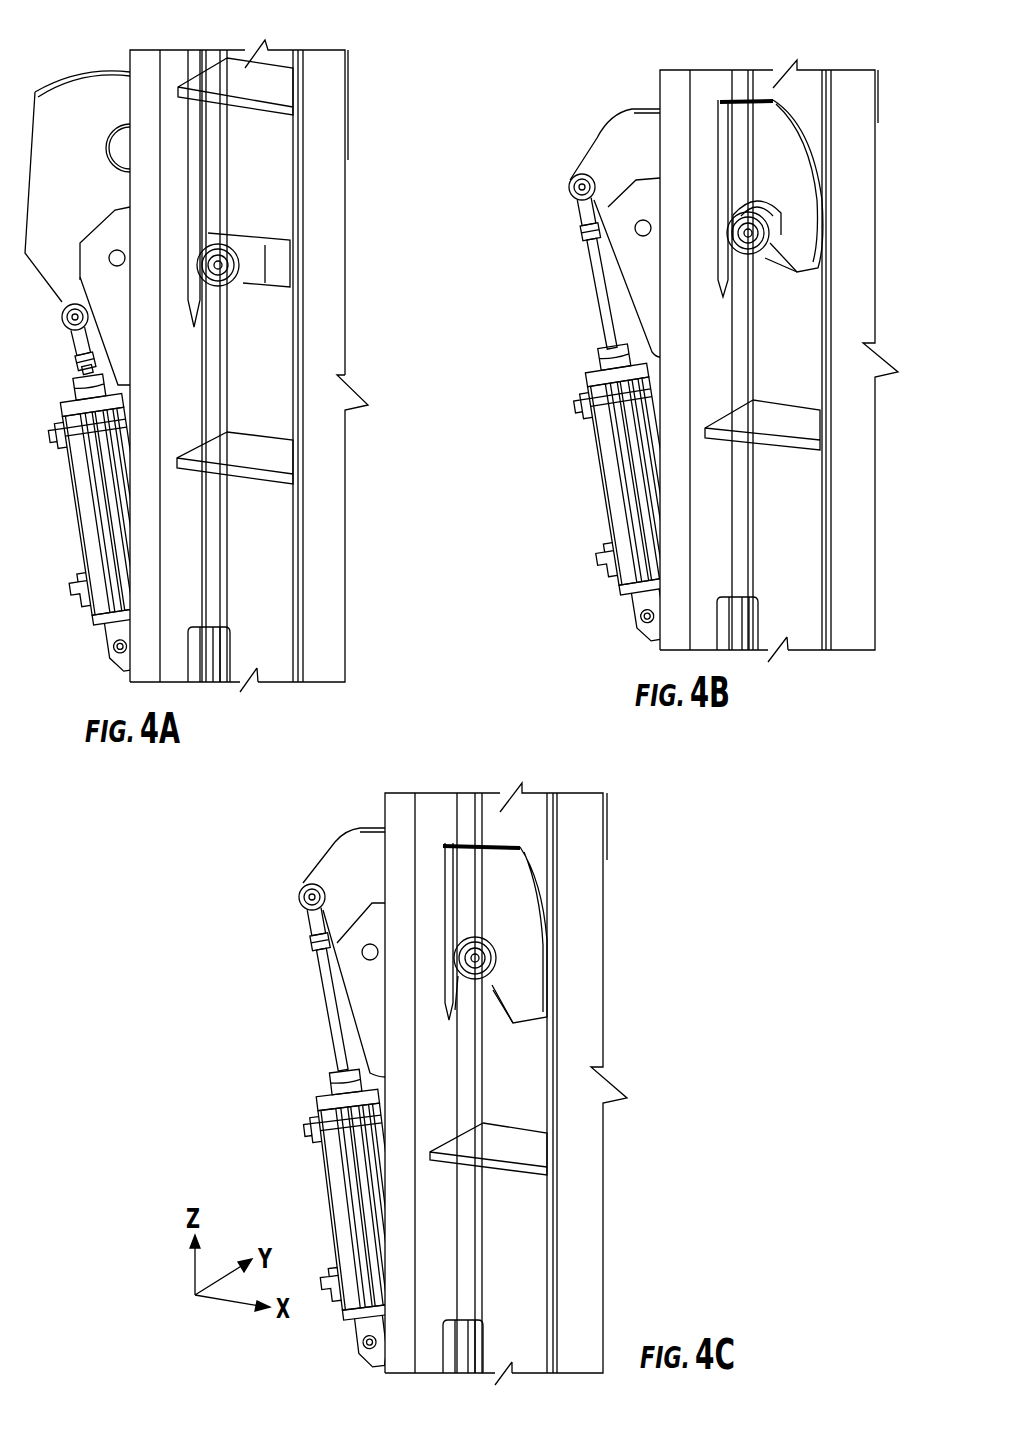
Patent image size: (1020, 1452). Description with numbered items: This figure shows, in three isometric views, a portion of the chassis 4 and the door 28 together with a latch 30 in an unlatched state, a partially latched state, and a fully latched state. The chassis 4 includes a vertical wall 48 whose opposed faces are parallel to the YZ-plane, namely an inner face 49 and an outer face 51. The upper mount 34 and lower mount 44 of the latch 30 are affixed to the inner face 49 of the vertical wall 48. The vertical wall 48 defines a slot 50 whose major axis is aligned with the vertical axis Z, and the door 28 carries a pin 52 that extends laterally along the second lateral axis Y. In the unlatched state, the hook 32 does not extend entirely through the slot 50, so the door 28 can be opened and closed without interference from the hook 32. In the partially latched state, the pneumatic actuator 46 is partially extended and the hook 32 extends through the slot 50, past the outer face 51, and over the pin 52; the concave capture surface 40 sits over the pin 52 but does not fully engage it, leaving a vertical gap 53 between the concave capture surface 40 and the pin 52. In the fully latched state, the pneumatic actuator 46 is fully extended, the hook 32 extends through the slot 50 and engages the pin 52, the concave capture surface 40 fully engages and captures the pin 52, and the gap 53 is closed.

In FIG. 4A, the chassis 4 is at (86, 500).
In FIG. 4B, the chassis 4 is at (602, 420).
In FIG. 4C, the chassis 4 is at (335, 1137).
In FIG. 4A, the door 28 is at (325, 197).
In FIG. 4B, the door 28 is at (863, 143).
In FIG. 4C, the door 28 is at (587, 1162).
In FIG. 4A, the latch 30 is at (75, 373).
In FIG. 4A, the hook 32 is at (67, 114).
In FIG. 4B, the hook 32 is at (730, 130).
In FIG. 4C, the hook 32 is at (460, 873).
In FIG. 4A, the upper mount 34 is at (98, 258).
In FIG. 4B, the concave capture surface 40 is at (750, 200).
In FIG. 4A, the lower mount 44 is at (110, 646).
In FIG. 4B, the pneumatic actuator 46 is at (618, 452).
In FIG. 4C, the pneumatic actuator 46 is at (350, 1187).
In FIG. 4A, the vertical wall 48 is at (170, 88).
In FIG. 4A, the inner face 49 is at (83, 440).
In FIG. 4A, the slot 50 is at (192, 173).
In FIG. 4B, the slot 50 is at (725, 87).
In FIG. 4C, the slot 50 is at (450, 819).
In FIG. 4A, the outer face 51 is at (188, 545).
In FIG. 4A, the pin 52 is at (218, 266).
In FIG. 4B, the pin 52 is at (750, 240).
In FIG. 4C, the pin 52 is at (477, 962).
In FIG. 4B, the vertical gap 53 is at (753, 200).